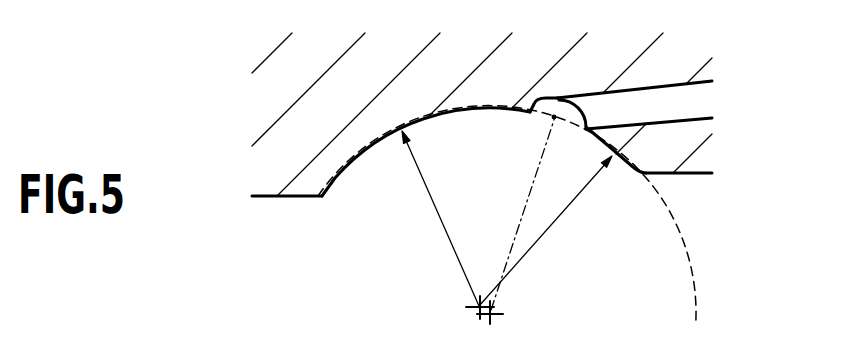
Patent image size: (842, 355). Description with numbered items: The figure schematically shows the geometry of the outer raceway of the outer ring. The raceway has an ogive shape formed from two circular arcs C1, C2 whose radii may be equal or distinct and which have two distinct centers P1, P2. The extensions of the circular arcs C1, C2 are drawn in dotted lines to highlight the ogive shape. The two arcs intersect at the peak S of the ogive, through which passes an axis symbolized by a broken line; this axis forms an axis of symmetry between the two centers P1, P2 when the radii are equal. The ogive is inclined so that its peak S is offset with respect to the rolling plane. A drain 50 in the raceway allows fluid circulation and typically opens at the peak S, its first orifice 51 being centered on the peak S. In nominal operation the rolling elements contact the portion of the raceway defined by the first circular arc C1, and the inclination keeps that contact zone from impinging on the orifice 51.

The drain 50 is at (662, 107).
The first orifice 51 is at (566, 100).
The peak of the ogive S is at (552, 119).
The first circular arc C1 is at (364, 151).
The second circular arc C2 is at (616, 161).
The center of the first circular arc P1 is at (494, 314).
The center of the second circular arc P2 is at (477, 305).